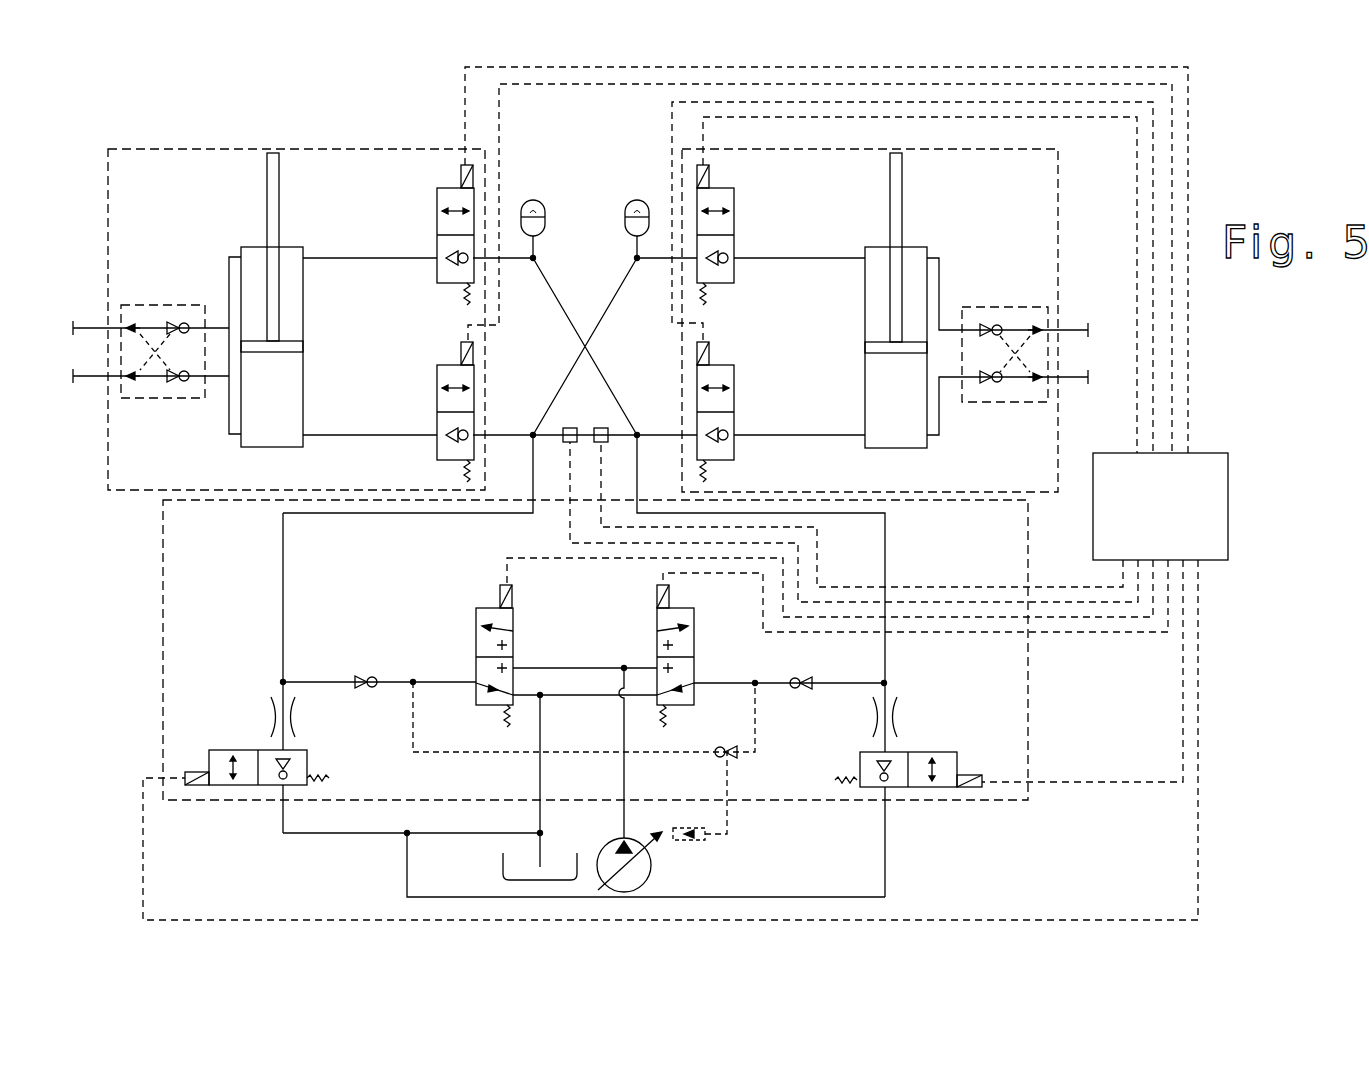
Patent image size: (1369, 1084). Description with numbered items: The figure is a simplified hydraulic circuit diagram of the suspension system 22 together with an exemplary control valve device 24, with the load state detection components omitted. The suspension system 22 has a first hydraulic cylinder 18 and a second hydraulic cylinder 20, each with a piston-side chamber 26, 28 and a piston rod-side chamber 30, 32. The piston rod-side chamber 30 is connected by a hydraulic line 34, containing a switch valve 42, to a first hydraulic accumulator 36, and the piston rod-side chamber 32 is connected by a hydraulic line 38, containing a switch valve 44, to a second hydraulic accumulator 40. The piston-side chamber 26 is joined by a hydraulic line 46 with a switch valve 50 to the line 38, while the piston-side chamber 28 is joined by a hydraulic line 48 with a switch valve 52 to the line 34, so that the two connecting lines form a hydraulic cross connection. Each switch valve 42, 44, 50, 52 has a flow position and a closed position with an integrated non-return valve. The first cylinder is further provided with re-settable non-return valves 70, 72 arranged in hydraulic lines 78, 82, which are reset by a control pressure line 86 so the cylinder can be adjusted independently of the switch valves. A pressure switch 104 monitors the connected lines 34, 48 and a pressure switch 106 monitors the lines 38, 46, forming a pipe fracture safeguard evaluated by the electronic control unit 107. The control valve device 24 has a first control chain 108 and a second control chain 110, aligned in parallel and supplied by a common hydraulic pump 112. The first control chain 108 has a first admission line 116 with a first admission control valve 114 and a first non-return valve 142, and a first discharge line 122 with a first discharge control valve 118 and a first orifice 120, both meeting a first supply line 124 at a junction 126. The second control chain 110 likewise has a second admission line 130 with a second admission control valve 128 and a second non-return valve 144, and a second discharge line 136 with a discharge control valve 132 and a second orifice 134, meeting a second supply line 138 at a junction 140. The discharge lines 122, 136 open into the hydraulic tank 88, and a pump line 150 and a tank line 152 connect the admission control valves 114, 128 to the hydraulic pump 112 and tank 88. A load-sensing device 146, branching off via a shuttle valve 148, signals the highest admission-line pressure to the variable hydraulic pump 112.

The first hydraulic cylinder 18 is at (287, 246).
The second hydraulic cylinder 20 is at (879, 246).
The suspension system 22 is at (1044, 486).
The control valve device 24 is at (1030, 722).
The piston-side chamber 26 is at (268, 448).
The piston-side chamber 28 is at (902, 449).
The piston rod-side chamber 30 is at (258, 246).
The piston rod-side chamber 32 is at (912, 246).
The hydraulic line 34 is at (314, 257).
The first hydraulic accumulator 36 is at (533, 200).
The hydraulic line 38 is at (797, 258).
The second hydraulic accumulator 40 is at (637, 200).
The switch valve 42 is at (445, 190).
The switch valve 44 is at (722, 188).
The hydraulic line 46 is at (326, 436).
The hydraulic line 48 is at (820, 436).
The switch valve 50 is at (476, 406).
The switch valve 52 is at (697, 402).
The piston-side non-return valve 70 is at (178, 382).
The piston rod-side non-return valve 72 is at (178, 322).
The hydraulic line 78 is at (150, 380).
The hydraulic line 82 is at (150, 328).
The control pressure line 86 is at (146, 366).
The hydraulic tank 88 is at (503, 858).
The pressure switch 104 is at (562, 441).
The pressure switch 106 is at (604, 428).
The electronic control unit 107 is at (1180, 520).
The first control chain 108 is at (270, 604).
The second control chain 110 is at (914, 636).
The hydraulic pump 112 is at (652, 879).
The first admission control valve 114 is at (513, 629).
The first admission line 116 is at (406, 681).
The first discharge control valve 118 is at (245, 750).
The first restrictor or orifice 120 is at (293, 719).
The first discharge line 122 is at (298, 834).
The first supply line 124 is at (400, 514).
The junction 126 is at (285, 681).
The second admission control valve 128 is at (657, 629).
The second admission line 130 is at (775, 682).
The discharge control valve 132 is at (920, 752).
The second restrictor or orifice 134 is at (877, 719).
The second discharge line 136 is at (896, 893).
The second supply line 138 is at (886, 548).
The junction 140 is at (887, 686).
The first non-return valve 142 is at (366, 674).
The second non-return valve 144 is at (812, 677).
The load-sensing device 146 is at (728, 818).
The shuttle valve 148 is at (727, 743).
The pump line 150 is at (626, 760).
The tank line 152 is at (542, 713).